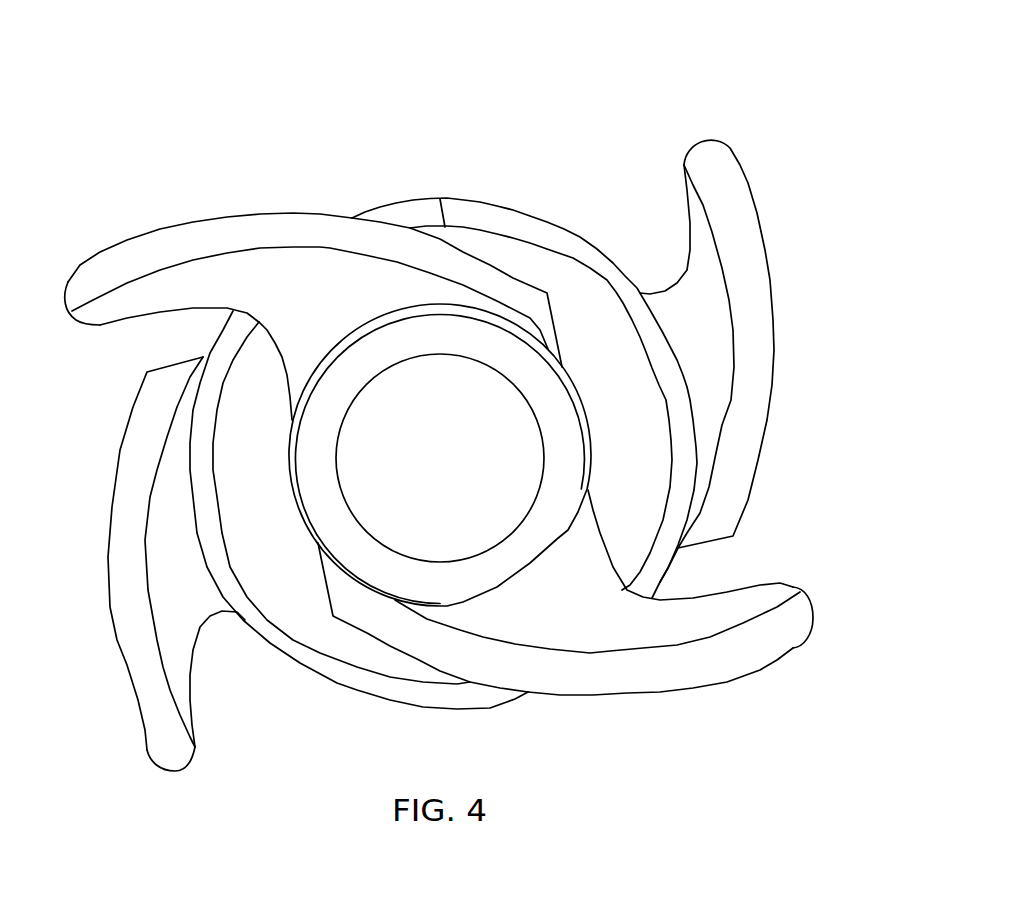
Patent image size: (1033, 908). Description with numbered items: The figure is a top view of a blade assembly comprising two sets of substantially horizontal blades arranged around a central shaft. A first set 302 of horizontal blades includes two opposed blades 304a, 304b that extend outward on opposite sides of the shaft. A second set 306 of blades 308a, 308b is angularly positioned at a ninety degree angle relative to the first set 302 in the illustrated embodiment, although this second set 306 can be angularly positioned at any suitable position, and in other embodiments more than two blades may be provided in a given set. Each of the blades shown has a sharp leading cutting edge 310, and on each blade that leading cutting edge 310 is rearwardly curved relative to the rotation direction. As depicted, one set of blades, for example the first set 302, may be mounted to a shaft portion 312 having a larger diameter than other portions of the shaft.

The first set of horizontal blades 302 is at (688, 70).
The blade 304a is at (752, 262).
The blade 304b is at (160, 557).
The second set of blades 306 is at (785, 699).
The blade 308a is at (634, 635).
The blade 308b is at (283, 277).
The leading cutting edge 310 is at (232, 234).
The shaft portion 312 is at (512, 250).